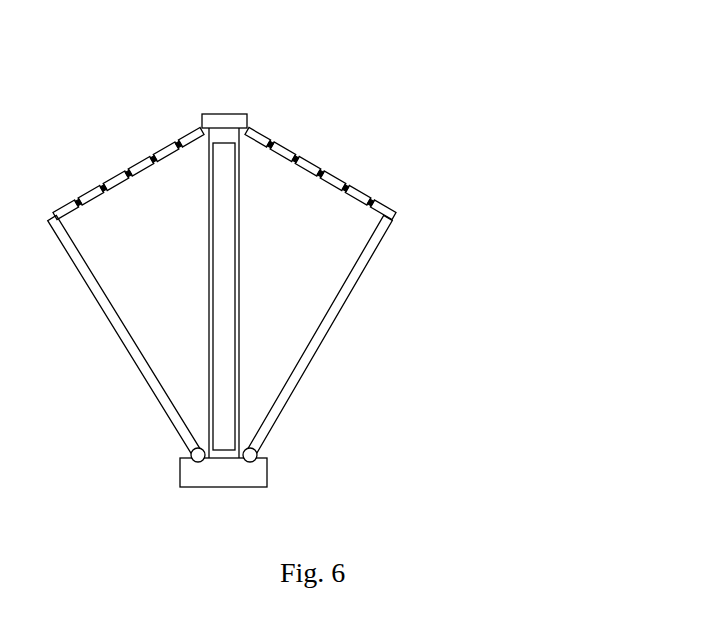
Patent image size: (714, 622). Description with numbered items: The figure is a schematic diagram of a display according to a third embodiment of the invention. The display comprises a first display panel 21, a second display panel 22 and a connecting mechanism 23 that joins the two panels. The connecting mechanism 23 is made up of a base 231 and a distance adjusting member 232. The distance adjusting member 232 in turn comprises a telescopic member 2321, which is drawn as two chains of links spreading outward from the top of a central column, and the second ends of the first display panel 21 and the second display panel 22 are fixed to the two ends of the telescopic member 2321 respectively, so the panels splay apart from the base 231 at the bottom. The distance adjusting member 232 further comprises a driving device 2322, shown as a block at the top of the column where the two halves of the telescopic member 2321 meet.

The first display panel 21 is at (108, 310).
The second display panel 22 is at (343, 297).
The connecting mechanism 23 is at (315, 281).
The base 231 is at (210, 473).
The distance adjusting member 232 is at (333, 129).
The telescopic member 2321 is at (283, 149).
The driving device 2322 is at (224, 118).